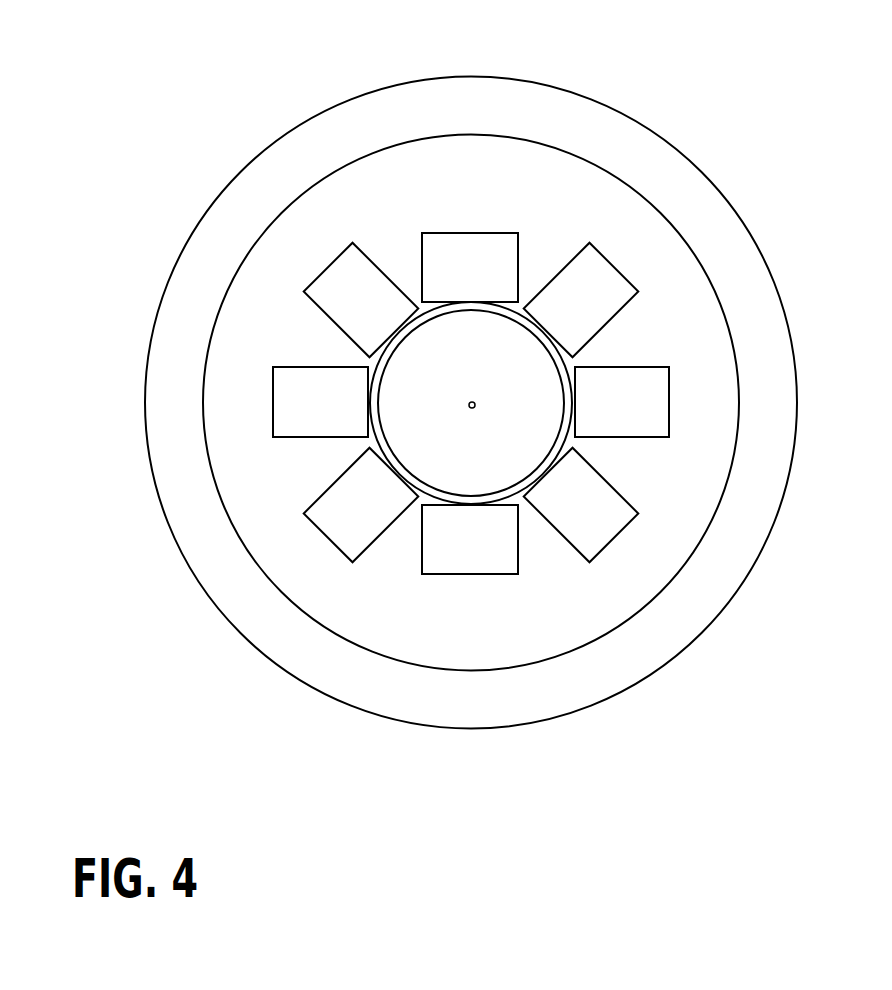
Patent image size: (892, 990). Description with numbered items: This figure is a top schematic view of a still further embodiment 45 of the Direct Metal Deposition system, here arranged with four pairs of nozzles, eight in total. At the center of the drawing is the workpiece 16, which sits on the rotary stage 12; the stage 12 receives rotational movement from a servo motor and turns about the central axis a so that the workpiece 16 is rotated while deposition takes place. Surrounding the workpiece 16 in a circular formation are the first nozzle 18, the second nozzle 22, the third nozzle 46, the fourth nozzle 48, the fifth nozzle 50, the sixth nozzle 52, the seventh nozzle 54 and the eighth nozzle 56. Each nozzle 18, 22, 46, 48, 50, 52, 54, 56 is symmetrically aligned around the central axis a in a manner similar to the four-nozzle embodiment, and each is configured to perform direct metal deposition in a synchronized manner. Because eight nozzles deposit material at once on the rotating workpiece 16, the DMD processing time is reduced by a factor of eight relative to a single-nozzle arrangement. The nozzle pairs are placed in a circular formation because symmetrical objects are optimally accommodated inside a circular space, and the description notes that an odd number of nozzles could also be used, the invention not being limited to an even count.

The still further embodiment 45 is at (663, 58).
The rotary stage 12 is at (555, 612).
The workpiece 16 is at (415, 332).
The central axis a is at (475, 406).
The first nozzle 18 is at (310, 411).
The second nozzle 22 is at (614, 411).
The third nozzle 46 is at (461, 278).
The fourth nozzle 48 is at (461, 549).
The fifth nozzle 50 is at (357, 317).
The sixth nozzle 52 is at (574, 517).
The seventh nozzle 54 is at (352, 516).
The eighth nozzle 56 is at (569, 319).